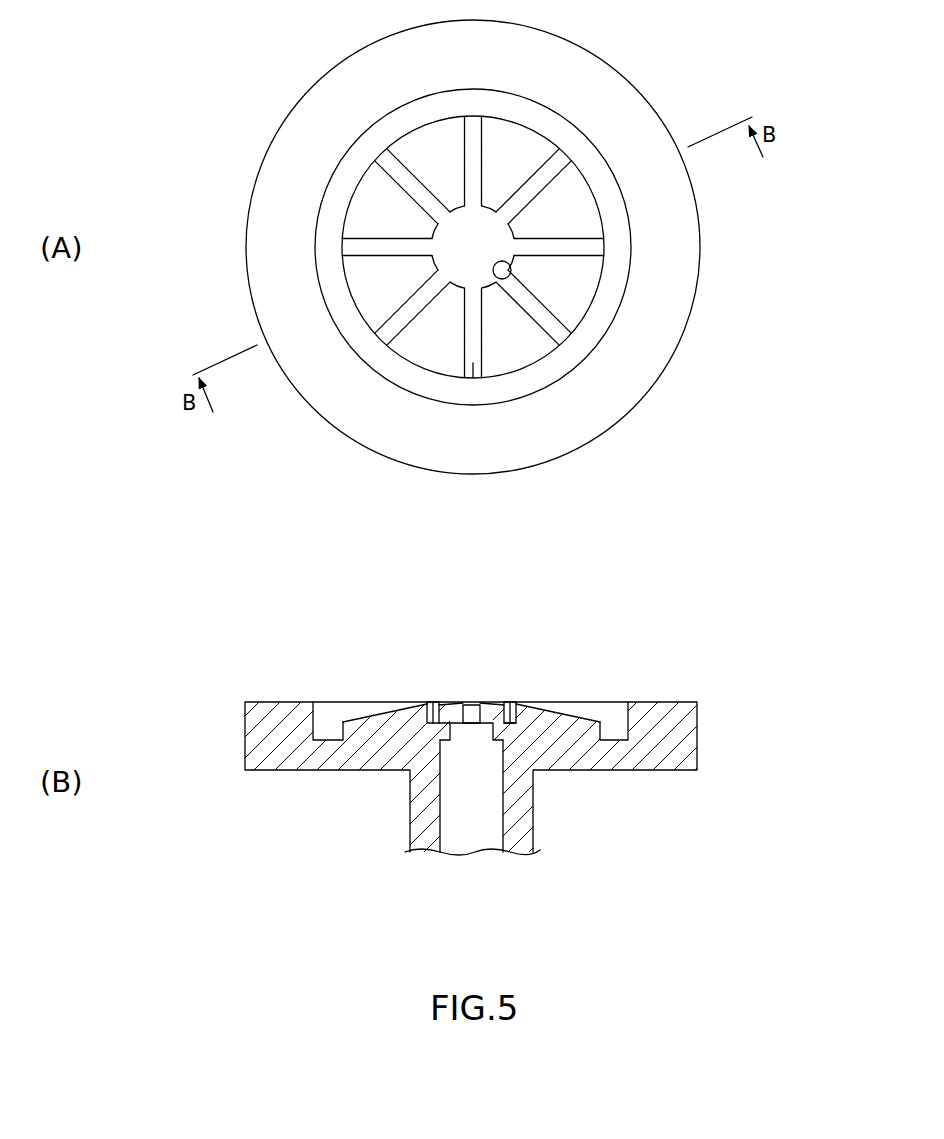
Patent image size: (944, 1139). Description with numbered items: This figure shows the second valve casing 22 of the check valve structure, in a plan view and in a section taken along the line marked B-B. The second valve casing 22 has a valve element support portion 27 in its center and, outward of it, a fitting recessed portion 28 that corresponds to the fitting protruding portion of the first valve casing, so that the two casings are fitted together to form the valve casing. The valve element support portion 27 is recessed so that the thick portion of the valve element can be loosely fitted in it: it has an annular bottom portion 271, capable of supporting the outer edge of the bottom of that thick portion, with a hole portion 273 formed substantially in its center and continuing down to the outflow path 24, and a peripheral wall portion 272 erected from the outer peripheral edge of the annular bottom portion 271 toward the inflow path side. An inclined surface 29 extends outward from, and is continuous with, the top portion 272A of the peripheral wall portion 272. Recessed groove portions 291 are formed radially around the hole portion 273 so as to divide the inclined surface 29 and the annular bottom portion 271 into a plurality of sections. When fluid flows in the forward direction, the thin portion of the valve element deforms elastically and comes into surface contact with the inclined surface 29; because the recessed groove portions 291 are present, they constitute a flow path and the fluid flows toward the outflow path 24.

The second valve casing 22 is at (796, 178).
The outflow path 24 is at (466, 838).
The valve element support portion 27 is at (833, 267).
The fitting recessed portion 28 is at (337, 198).
The inclined surface 29 is at (517, 347).
The annular bottom portion 271 is at (510, 224).
The peripheral wall portion 272 is at (503, 278).
The top portion 272A is at (425, 699).
The hole portion 273 is at (468, 243).
The recessed groove portions 291 is at (472, 362).